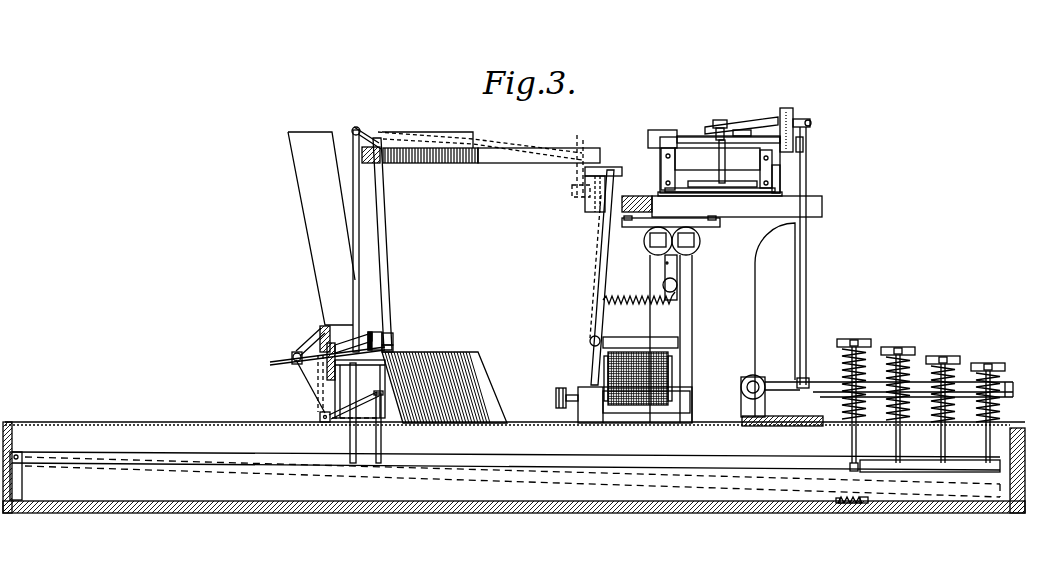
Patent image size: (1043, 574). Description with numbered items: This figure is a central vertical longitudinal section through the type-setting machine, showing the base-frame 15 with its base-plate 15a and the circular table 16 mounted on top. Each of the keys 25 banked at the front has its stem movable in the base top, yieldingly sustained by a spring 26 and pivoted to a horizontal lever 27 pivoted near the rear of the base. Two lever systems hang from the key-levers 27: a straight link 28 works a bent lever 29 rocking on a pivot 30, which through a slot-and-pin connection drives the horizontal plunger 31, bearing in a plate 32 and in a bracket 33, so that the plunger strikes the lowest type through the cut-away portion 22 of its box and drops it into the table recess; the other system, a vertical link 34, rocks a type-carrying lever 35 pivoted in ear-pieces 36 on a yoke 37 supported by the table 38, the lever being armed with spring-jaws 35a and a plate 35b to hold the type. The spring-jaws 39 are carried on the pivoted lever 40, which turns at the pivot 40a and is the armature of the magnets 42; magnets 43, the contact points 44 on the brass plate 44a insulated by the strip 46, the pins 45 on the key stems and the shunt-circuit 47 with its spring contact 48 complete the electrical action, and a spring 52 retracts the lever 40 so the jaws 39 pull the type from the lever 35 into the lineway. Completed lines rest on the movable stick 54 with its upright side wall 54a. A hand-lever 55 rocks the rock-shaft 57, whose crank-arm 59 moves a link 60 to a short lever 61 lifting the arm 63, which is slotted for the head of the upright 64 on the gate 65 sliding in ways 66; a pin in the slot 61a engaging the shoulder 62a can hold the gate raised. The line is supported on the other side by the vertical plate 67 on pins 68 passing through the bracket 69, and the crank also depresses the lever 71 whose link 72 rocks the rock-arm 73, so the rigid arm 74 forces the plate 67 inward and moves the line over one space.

The base-frame 15 is at (7, 438).
The base-plate 15a is at (150, 421).
The circular table 16 is at (453, 365).
The cut-away portion of type-box 22 is at (377, 344).
The keys 25 is at (866, 339).
The spring 26 is at (865, 378).
The horizontal levers 27 is at (743, 467).
The straight link 28 is at (378, 438).
The bent lever 29 is at (352, 403).
The pivot 30 is at (320, 415).
The plunger 31 is at (285, 362).
The plate 32 is at (320, 331).
The bracket 33 is at (310, 350).
The vertically-working link 34 is at (357, 262).
The type-carrying lever 35 is at (388, 265).
The spring-jaws 35a is at (393, 347).
The plate 35b is at (393, 337).
The ear-pieces 36 is at (373, 132).
The yoke 37 is at (527, 158).
The table 38 is at (722, 211).
The spring-jaws 39 is at (603, 167).
The pivoted lever 40 is at (605, 253).
The lever pivot 40a is at (590, 343).
The magnets 42 is at (638, 378).
The magnets 43 is at (698, 245).
The metallic points 44 is at (855, 497).
The brass plate 44a is at (836, 500).
The metallic pin 45 is at (856, 469).
The insulating strip 46 is at (868, 501).
The shunt-circuit 47 is at (566, 414).
The spring contact-point 48 is at (603, 412).
The spring 52 is at (623, 297).
The movable stick 54 is at (742, 197).
The upright side wall 54a is at (780, 188).
The hand-lever 55 is at (810, 390).
The rock-shaft 57 is at (741, 393).
The crank-arm 59 is at (767, 392).
The link 60 is at (808, 321).
The short lever 61 is at (742, 134).
The slot 61a is at (793, 108).
The shoulder 62a is at (782, 108).
The arm 63 is at (738, 128).
The upright 64 is at (715, 133).
The gate 65 is at (688, 170).
The ways 66 is at (666, 130).
The vertical plate 67 is at (722, 179).
The pins 68 is at (757, 190).
The bracket 69 is at (660, 164).
The lever 71 is at (800, 408).
The link 72 is at (795, 303).
The rock-arm 73 is at (758, 140).
The rigid arm 74 is at (726, 178).